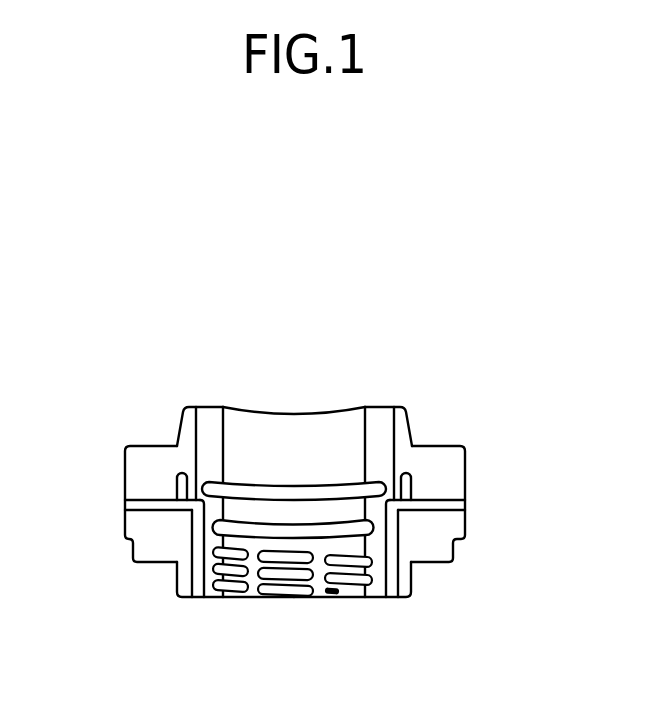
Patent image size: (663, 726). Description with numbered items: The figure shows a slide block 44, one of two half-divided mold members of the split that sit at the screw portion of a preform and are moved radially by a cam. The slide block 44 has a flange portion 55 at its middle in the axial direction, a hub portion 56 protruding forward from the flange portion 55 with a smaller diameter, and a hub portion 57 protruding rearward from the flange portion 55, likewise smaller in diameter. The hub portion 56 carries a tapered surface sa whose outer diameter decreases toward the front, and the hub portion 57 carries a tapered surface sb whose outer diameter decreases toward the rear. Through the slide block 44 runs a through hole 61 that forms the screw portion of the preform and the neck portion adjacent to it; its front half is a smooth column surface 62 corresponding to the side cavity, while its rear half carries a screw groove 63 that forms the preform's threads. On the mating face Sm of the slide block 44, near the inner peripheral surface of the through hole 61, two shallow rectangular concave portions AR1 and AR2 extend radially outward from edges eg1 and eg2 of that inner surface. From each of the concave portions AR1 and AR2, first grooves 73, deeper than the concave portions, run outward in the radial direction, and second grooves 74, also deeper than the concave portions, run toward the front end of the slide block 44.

The slide block 44 is at (294, 368).
The smooth column surface 62 is at (268, 437).
The through hole 61 is at (327, 435).
The concave portion AR1 is at (208, 418).
The edge eg1 is at (239, 445).
The edge eg2 is at (352, 445).
The concave portion AR2 is at (382, 418).
The tapered surface sa is at (180, 428).
The hub portion 56 is at (413, 425).
The mating face Sm is at (145, 468).
The flange portion 55 is at (465, 473).
The first groove 73 is at (133, 506).
The tapered surface sb is at (173, 575).
The hub portion 57 is at (413, 575).
The second groove 74 is at (196, 592).
The screw groove 63 is at (285, 590).